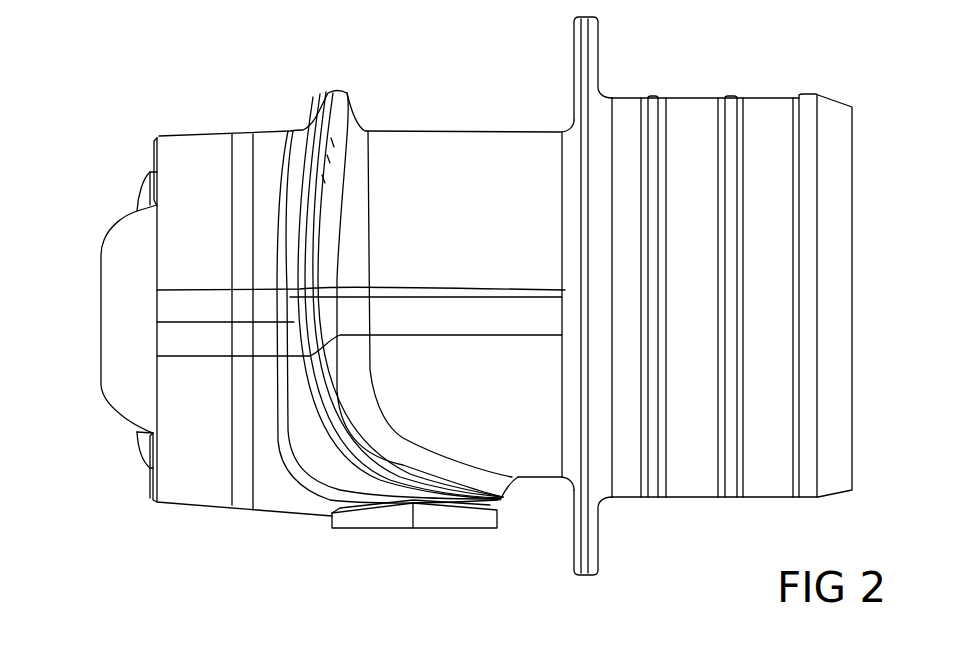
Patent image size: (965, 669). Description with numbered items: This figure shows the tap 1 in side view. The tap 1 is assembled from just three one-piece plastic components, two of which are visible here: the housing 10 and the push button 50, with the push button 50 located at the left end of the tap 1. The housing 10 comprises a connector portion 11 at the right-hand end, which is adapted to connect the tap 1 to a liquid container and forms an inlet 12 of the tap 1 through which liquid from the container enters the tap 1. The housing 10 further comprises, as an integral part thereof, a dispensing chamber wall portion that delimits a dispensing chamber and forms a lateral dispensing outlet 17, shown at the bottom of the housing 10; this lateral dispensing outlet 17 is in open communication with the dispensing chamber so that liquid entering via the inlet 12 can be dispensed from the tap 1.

The tap 1 is at (227, 520).
The housing 10 is at (497, 145).
The connector portion 11 is at (690, 92).
The inlet 12 is at (865, 300).
The lateral dispensing outlet 17 is at (398, 530).
The push button 50 is at (145, 442).